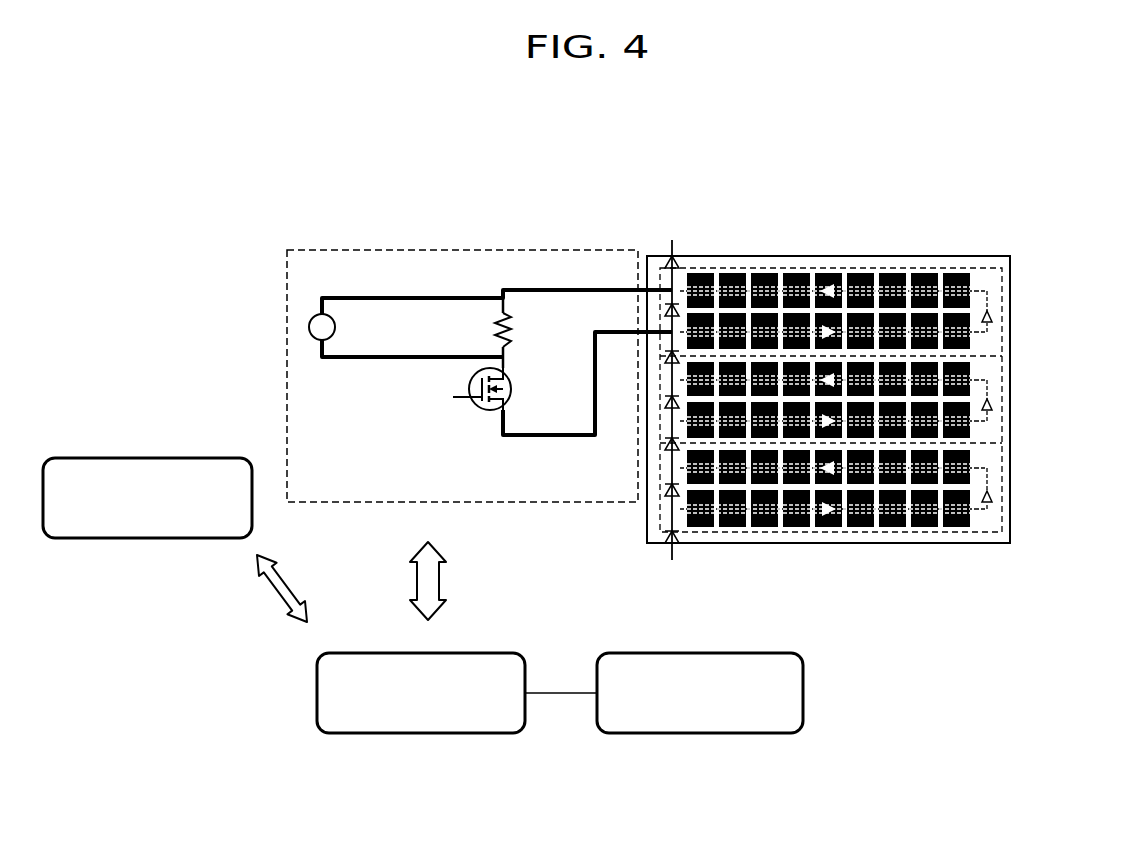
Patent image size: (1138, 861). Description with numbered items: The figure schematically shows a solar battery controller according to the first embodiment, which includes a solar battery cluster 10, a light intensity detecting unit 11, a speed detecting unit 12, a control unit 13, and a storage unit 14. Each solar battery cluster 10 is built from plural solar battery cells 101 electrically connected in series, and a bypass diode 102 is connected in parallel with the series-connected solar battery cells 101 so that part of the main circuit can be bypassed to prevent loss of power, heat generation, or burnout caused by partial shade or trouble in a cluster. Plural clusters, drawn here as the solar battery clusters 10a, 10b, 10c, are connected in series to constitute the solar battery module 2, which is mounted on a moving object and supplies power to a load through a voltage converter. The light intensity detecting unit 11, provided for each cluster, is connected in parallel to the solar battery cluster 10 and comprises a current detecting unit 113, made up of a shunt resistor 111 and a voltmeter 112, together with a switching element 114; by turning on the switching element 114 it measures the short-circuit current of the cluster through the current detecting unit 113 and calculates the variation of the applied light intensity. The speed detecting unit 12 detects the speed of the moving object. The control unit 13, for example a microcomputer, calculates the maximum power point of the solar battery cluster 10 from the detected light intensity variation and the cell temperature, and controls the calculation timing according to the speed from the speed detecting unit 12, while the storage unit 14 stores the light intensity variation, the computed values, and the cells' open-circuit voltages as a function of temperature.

The solar battery module 2 is at (893, 248).
The solar battery cluster 10 is at (895, 366).
The solar battery cluster 10a is at (1012, 317).
The solar battery cluster 10b is at (1012, 405).
The solar battery cluster 10c is at (1012, 497).
The light intensity detecting unit 11 is at (280, 358).
The speed detecting unit 12 is at (163, 538).
The control unit 13 is at (447, 733).
The storage unit 14 is at (700, 733).
The solar battery cell 101 is at (951, 272).
The bypass diode 102 is at (672, 502).
The shunt resistor 111 is at (500, 296).
The voltmeter 112 is at (327, 296).
The current detecting unit 113 is at (337, 215).
The switching element 114 is at (472, 411).